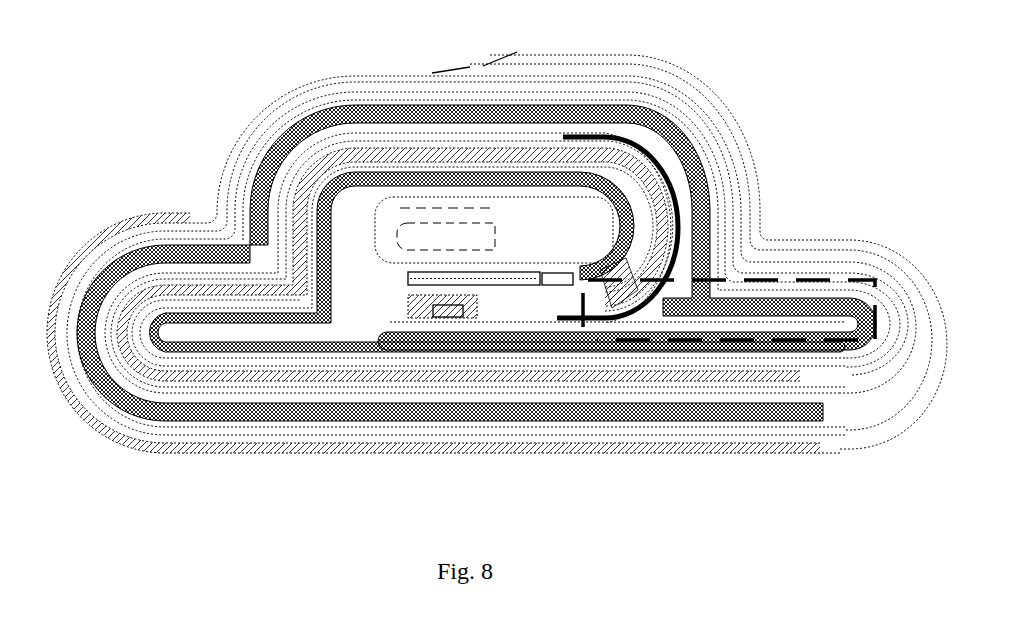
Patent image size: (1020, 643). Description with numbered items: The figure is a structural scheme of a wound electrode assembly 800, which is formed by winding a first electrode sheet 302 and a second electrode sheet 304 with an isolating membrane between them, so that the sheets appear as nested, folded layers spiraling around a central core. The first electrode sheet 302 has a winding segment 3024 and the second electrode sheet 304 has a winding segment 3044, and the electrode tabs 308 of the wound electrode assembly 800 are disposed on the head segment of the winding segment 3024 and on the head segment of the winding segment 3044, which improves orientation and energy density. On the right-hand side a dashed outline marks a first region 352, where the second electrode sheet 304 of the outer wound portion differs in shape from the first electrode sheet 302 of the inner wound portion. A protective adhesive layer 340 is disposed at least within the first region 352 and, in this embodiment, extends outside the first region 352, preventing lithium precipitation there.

The wound electrode assembly 800 is at (170, 87).
The first electrode sheet 302 is at (475, 280).
The second electrode sheet 304 is at (700, 217).
The winding segment of the first electrode sheet 3024 is at (648, 285).
The winding segment of the second electrode sheet 3044 is at (603, 272).
The electrode tabs 308 is at (456, 315).
The protective adhesive layer 340 is at (622, 280).
The first region 352 is at (793, 280).